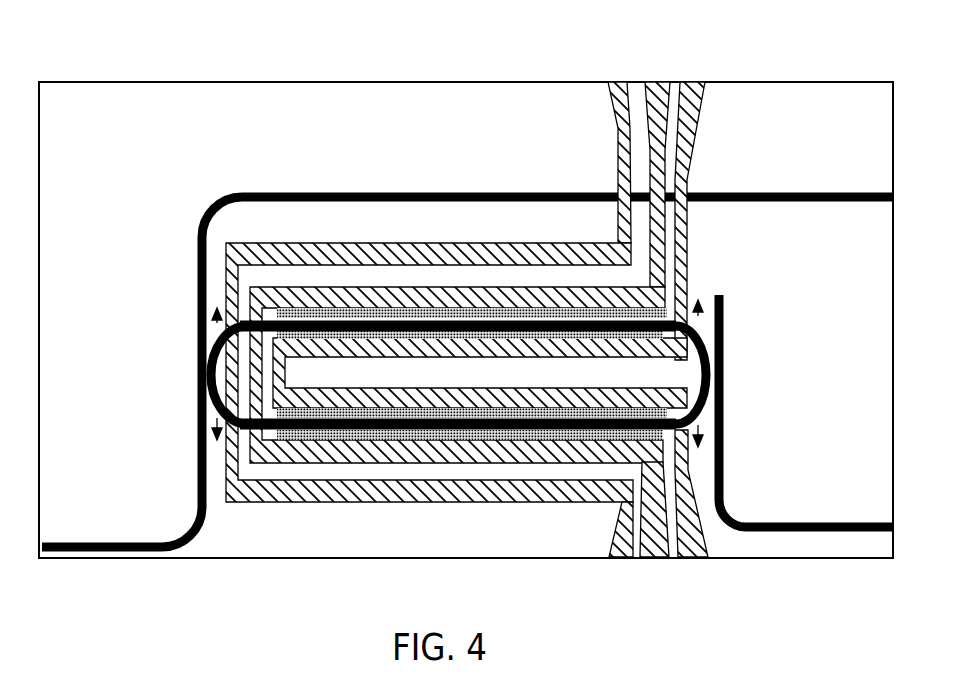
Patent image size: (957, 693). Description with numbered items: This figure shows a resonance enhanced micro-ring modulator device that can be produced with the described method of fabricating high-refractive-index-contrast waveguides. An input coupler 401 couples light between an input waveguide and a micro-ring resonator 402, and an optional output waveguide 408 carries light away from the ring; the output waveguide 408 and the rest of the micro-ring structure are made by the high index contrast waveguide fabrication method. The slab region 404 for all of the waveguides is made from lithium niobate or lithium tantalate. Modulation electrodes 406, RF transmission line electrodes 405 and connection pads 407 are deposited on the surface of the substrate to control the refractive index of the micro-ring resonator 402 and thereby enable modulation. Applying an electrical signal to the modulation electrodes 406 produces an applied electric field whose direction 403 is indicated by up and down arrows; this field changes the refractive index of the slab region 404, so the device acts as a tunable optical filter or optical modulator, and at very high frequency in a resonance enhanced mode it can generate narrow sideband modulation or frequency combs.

The input coupler 401 is at (198, 377).
The micro-ring resonator 402 is at (227, 312).
The applied electric field direction 403 is at (702, 426).
The slab region 404 is at (696, 154).
The RF transmission line electrodes 405 is at (430, 295).
The modulation electrodes 406 is at (558, 310).
The connection pads 407 is at (627, 548).
The output waveguide 408 is at (805, 522).